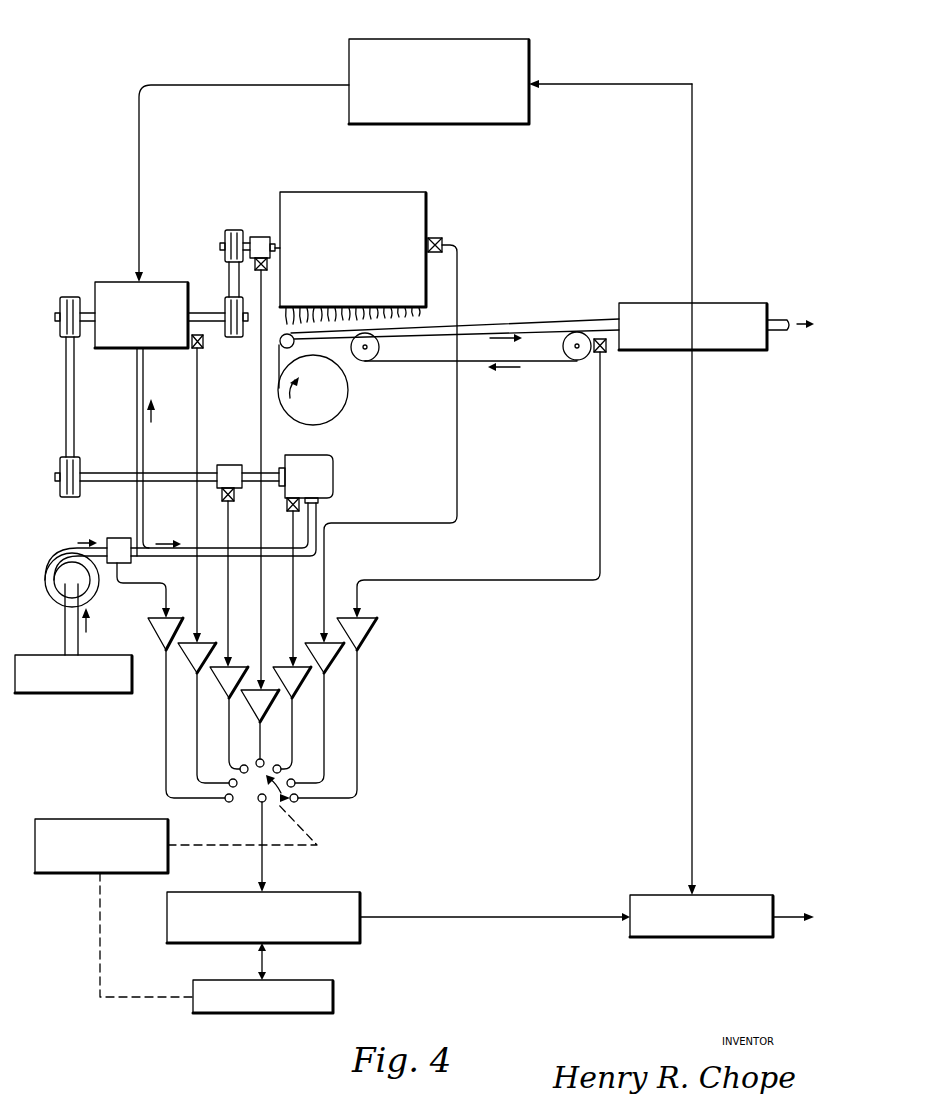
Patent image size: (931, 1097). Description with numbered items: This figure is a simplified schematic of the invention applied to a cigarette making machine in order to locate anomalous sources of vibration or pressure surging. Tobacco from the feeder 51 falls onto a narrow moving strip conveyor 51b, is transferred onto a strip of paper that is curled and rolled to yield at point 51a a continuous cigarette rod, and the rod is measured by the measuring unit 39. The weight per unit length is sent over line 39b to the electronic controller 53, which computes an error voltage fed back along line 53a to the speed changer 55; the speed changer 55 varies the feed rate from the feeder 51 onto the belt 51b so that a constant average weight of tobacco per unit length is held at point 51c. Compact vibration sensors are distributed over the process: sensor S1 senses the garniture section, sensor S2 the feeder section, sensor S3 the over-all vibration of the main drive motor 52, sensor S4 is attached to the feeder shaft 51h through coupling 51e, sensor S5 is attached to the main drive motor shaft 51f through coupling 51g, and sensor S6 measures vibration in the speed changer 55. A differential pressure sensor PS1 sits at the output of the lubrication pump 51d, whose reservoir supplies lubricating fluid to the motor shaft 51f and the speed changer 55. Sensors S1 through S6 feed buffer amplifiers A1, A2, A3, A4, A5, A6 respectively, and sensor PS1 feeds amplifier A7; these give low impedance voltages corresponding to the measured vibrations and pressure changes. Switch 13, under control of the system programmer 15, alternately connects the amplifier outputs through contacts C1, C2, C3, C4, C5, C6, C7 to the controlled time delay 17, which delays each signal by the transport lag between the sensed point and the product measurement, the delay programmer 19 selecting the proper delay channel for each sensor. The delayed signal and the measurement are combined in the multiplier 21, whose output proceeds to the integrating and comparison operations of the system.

The electronic controller 53 is at (466, 40).
The line 53a is at (256, 84).
The line 39b is at (693, 152).
The speed changer 55 is at (158, 283).
The vibration sensor S6 is at (204, 349).
The feeder shaft 51h is at (250, 224).
The coupling 51e is at (259, 237).
The vibration sensor S4 is at (258, 271).
The feeder 51 is at (360, 191).
The vibration sensor S2 is at (443, 240).
The strip conveyor 51b is at (340, 334).
The point 51a is at (595, 318).
The measuring unit 39 is at (722, 303).
The point 51c is at (771, 319).
The vibration sensor S1 is at (606, 353).
The coupling 51g is at (228, 465).
The vibration sensor S5 is at (226, 502).
The main drive motor shaft 51f is at (267, 472).
The main drive motor 52 is at (334, 463).
The vibration sensor S3 is at (290, 504).
The differential pressure sensor PS1 is at (117, 538).
The lubrication pump reservoir 51d is at (78, 695).
The buffer amplifier A1 is at (337, 708).
The buffer amplifier A2 is at (319, 713).
The buffer amplifier A3 is at (292, 718).
The buffer amplifier A4 is at (260, 724).
The buffer amplifier A5 is at (229, 718).
The buffer amplifier A6 is at (203, 713).
The amplifier A7 is at (186, 708).
The contact C1 is at (224, 811).
The contact C2 is at (231, 782).
The contact C3 is at (247, 762).
The contact C4 is at (263, 762).
The contact C5 is at (281, 768).
The contact C6 is at (295, 784).
The contact C7 is at (297, 801).
The switch 13 is at (259, 821).
The system programmer 15 is at (110, 818).
The controlled time delay 17 is at (308, 891).
The delay programmer 19 is at (334, 989).
The multiplier 21 is at (736, 895).